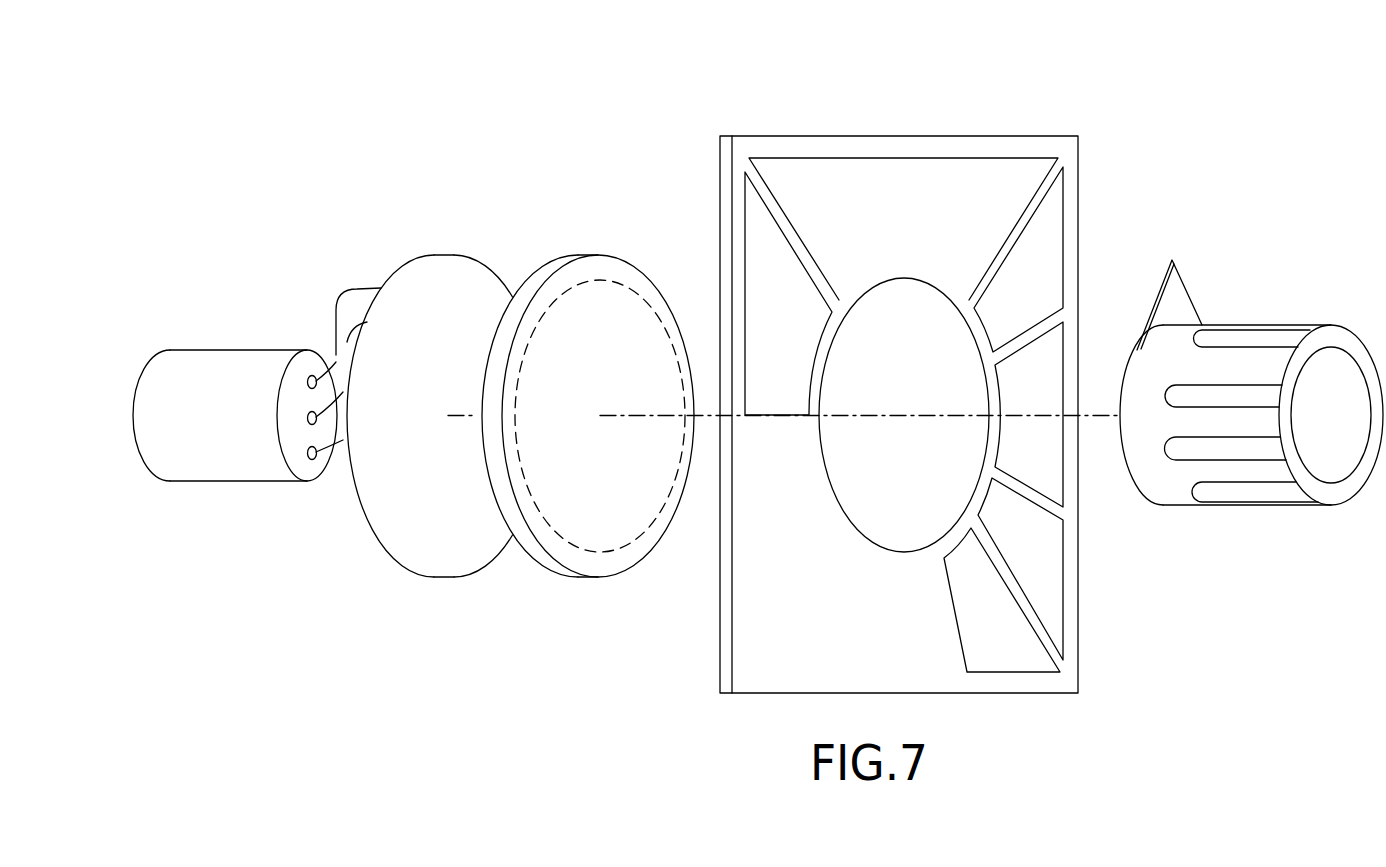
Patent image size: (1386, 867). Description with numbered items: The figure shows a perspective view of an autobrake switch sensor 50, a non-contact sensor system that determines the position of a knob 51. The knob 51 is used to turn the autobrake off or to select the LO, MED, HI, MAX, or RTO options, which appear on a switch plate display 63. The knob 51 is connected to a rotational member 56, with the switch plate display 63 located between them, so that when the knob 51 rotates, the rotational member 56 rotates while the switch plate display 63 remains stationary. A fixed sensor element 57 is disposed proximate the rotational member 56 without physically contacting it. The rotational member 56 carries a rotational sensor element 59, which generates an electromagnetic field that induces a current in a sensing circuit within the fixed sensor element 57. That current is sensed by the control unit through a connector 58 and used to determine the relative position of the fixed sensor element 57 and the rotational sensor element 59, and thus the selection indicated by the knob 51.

The autobrake switch sensor 50 is at (688, 77).
The knob 51 is at (1272, 484).
The rotational member 56 is at (603, 266).
The fixed sensor element 57 is at (470, 553).
The connector 58 is at (226, 368).
The rotational sensor element 59 is at (607, 552).
The switch plate display 63 is at (957, 136).